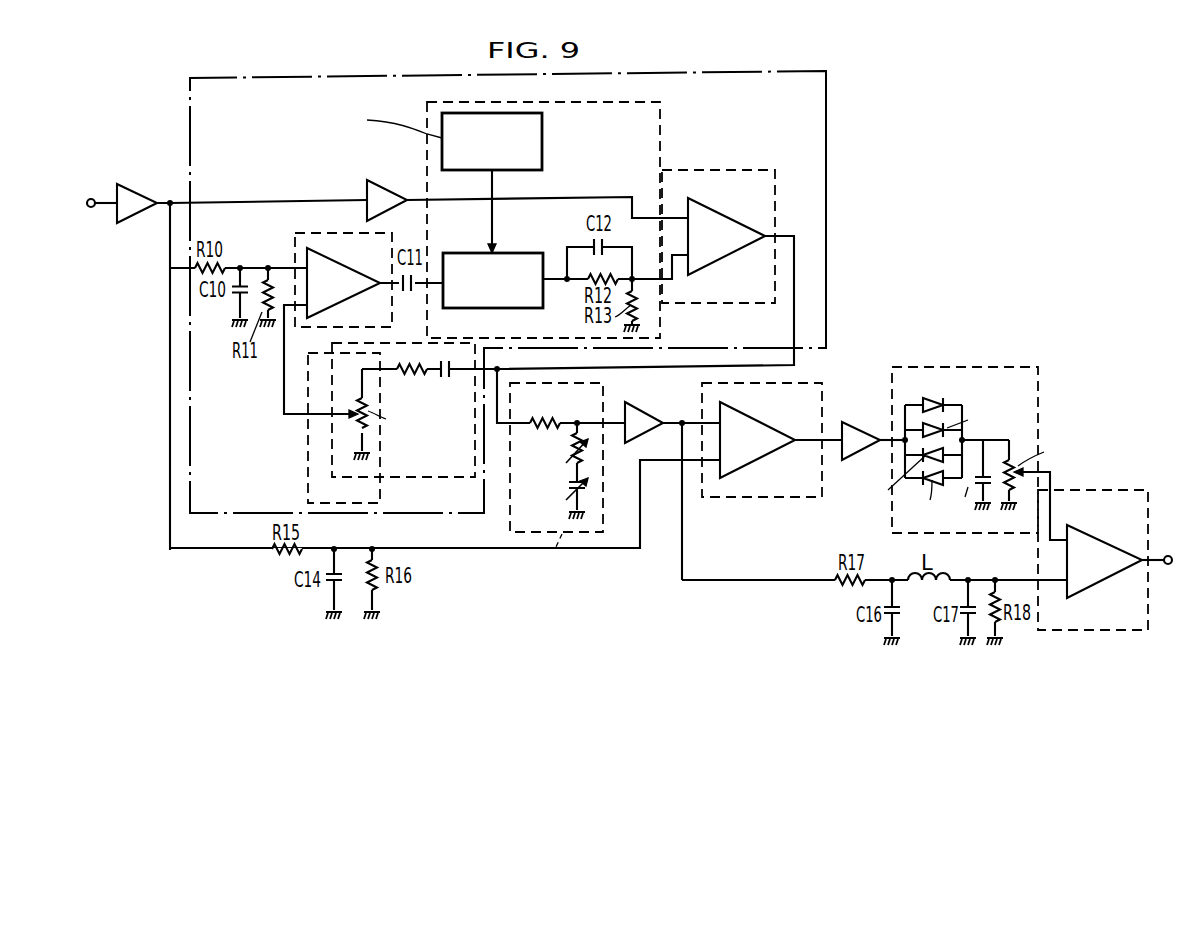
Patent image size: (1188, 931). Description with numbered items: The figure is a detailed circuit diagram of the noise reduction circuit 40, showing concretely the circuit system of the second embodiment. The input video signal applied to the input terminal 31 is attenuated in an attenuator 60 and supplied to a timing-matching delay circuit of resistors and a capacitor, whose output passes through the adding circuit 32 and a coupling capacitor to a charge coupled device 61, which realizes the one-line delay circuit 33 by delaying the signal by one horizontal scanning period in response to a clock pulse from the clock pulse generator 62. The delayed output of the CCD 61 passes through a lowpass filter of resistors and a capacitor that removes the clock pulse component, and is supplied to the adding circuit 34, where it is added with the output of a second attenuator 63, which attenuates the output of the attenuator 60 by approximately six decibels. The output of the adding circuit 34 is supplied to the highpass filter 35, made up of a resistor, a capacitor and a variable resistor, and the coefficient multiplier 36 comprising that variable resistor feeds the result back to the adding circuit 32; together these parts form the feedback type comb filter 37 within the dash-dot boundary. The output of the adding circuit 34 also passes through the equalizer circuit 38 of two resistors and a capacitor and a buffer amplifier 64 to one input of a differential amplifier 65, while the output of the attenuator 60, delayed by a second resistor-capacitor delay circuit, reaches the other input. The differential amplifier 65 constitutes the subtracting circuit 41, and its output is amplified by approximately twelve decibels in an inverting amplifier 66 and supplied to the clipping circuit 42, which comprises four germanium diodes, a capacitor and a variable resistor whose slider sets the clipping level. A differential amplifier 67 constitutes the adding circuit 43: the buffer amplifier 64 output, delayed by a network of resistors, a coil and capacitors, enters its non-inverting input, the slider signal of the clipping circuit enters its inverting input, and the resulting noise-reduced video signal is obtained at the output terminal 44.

The input terminal 31 is at (93, 198).
The attenuator 60 is at (134, 194).
The attenuator 63 is at (386, 190).
The clock pulse generator 62 is at (542, 133).
The 1H delay circuit 33 is at (660, 107).
The charge coupled device (CCD) 61 is at (508, 256).
The adding circuit 32 is at (295, 238).
The adding circuit 34 is at (750, 170).
The feedback type comb filter 37 is at (828, 208).
The noise reduction circuit 40 is at (887, 72).
The coefficient multiplier 36 is at (307, 433).
The highpass filter 35 is at (402, 479).
The equalizer circuit 38 is at (510, 526).
The buffer amplifier 64 is at (644, 430).
The differential amplifier 65 is at (765, 401).
The subtracting circuit 41 is at (756, 455).
The inverting amplifier 66 is at (864, 451).
The clipping circuit 42 is at (945, 366).
The adding circuit 43 is at (1093, 555).
The differential amplifier 67 is at (1108, 548).
The output terminal 44 is at (1168, 556).